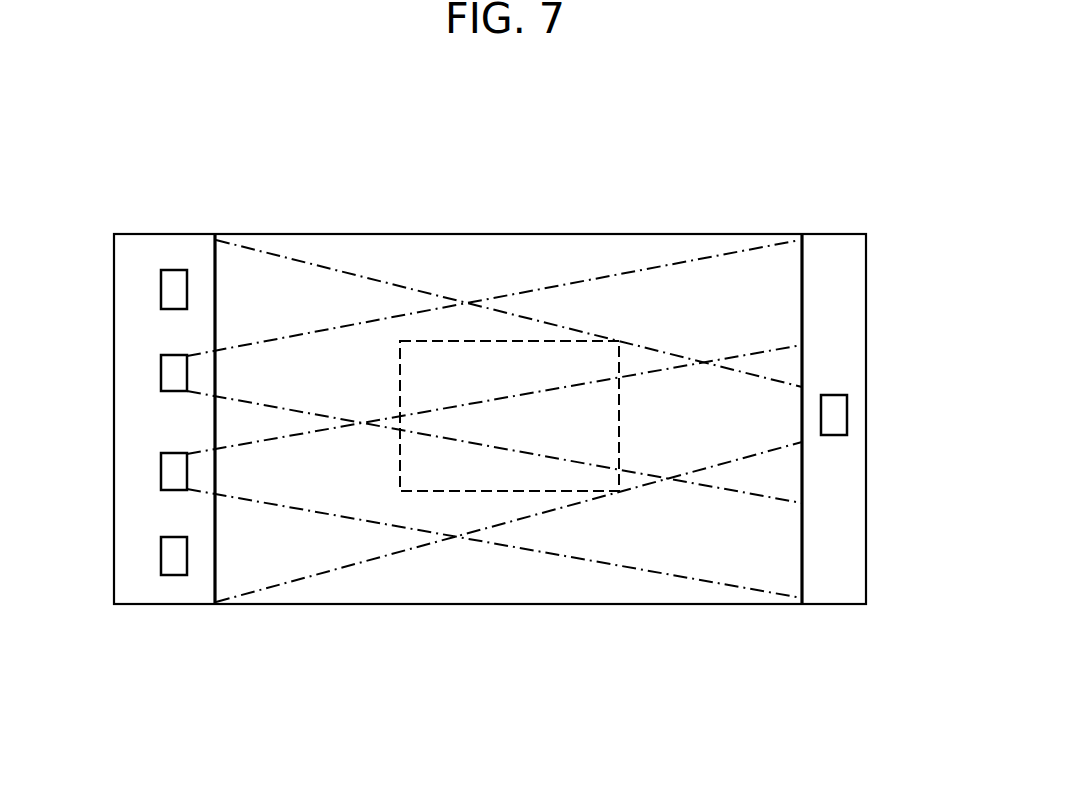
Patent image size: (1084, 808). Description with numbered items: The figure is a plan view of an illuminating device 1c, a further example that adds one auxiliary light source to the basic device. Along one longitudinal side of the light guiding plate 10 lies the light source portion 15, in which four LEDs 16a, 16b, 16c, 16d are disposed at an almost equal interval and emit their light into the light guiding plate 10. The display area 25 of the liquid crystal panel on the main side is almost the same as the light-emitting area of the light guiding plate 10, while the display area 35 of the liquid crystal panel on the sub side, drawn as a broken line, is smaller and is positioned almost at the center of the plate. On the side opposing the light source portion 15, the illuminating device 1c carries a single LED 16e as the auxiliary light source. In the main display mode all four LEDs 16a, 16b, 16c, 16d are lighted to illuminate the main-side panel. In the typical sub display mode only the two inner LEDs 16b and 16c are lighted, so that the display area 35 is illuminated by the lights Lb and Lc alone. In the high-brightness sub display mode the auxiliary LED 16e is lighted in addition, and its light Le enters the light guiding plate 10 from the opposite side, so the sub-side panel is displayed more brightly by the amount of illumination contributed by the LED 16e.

The illuminating device 1c is at (490, 369).
The light guiding plate 10 is at (557, 262).
The light source portion 15 is at (150, 262).
The LED 16a is at (162, 554).
The LED 16b is at (162, 468).
The LED 16c is at (165, 372).
The LED 16d is at (165, 291).
The auxiliary light source LED 16e is at (840, 412).
The display area of the liquid crystal panel on the main side 25 is at (802, 612).
The display area of the liquid crystal panel on the sub side 35 is at (488, 341).
The light from LED 16b Lb is at (273, 482).
The light from LED 16c Lc is at (271, 366).
The light from auxiliary LED 16e Le is at (765, 422).